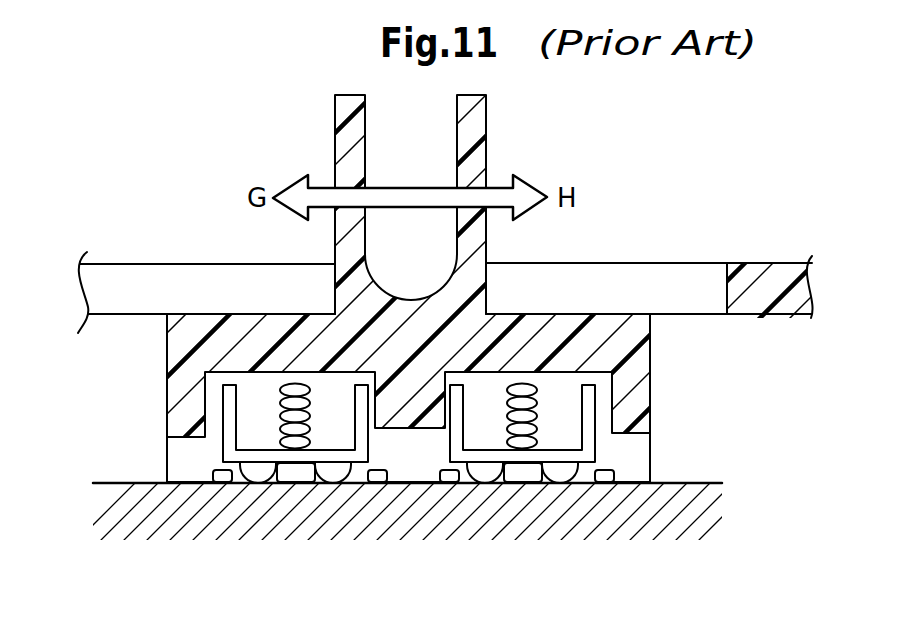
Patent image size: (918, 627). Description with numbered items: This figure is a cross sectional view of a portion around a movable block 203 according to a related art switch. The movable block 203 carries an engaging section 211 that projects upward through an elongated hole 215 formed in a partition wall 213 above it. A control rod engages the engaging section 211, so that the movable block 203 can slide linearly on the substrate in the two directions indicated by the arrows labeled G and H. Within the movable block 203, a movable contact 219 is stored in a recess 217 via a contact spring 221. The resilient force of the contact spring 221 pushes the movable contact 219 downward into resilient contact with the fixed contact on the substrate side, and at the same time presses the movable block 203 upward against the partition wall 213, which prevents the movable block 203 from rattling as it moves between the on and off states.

The movable block 203 is at (580, 310).
The engaging section 211 is at (487, 142).
The partition wall 213 is at (127, 264).
The elongated hole 215 is at (198, 276).
The recess 217 is at (560, 375).
The movable contact 219 is at (372, 472).
The contact spring 221 is at (280, 412).